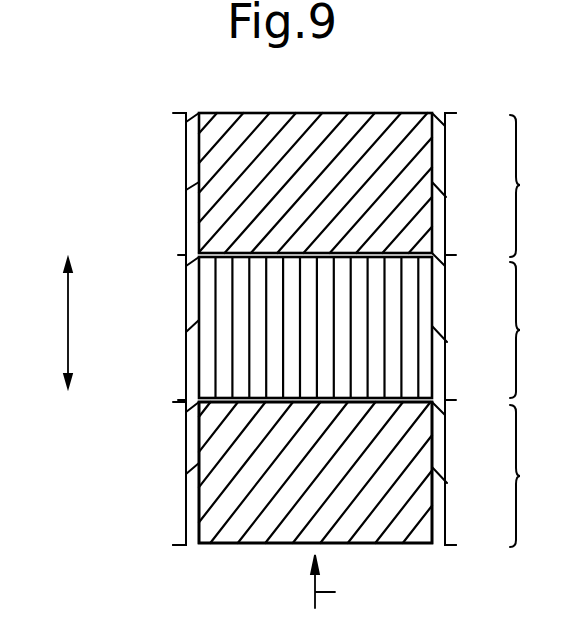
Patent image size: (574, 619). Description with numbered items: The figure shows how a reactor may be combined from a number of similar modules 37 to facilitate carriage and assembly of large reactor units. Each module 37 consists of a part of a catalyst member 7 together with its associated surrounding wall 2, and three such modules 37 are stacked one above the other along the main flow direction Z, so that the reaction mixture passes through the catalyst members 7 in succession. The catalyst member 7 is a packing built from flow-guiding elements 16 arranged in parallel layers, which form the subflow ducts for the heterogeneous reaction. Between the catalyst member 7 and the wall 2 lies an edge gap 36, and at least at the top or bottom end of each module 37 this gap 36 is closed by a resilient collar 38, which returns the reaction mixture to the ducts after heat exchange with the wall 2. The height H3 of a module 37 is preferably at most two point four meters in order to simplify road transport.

The wall 2 is at (447, 184).
The catalyst member 7 is at (222, 209).
The flow-guiding elements 16 is at (228, 449).
The edge gap 36 is at (194, 522).
The module 37 is at (531, 331).
The collar 38 is at (202, 185).
The height of a module H3 is at (47, 323).
The main flow direction Z is at (333, 586).